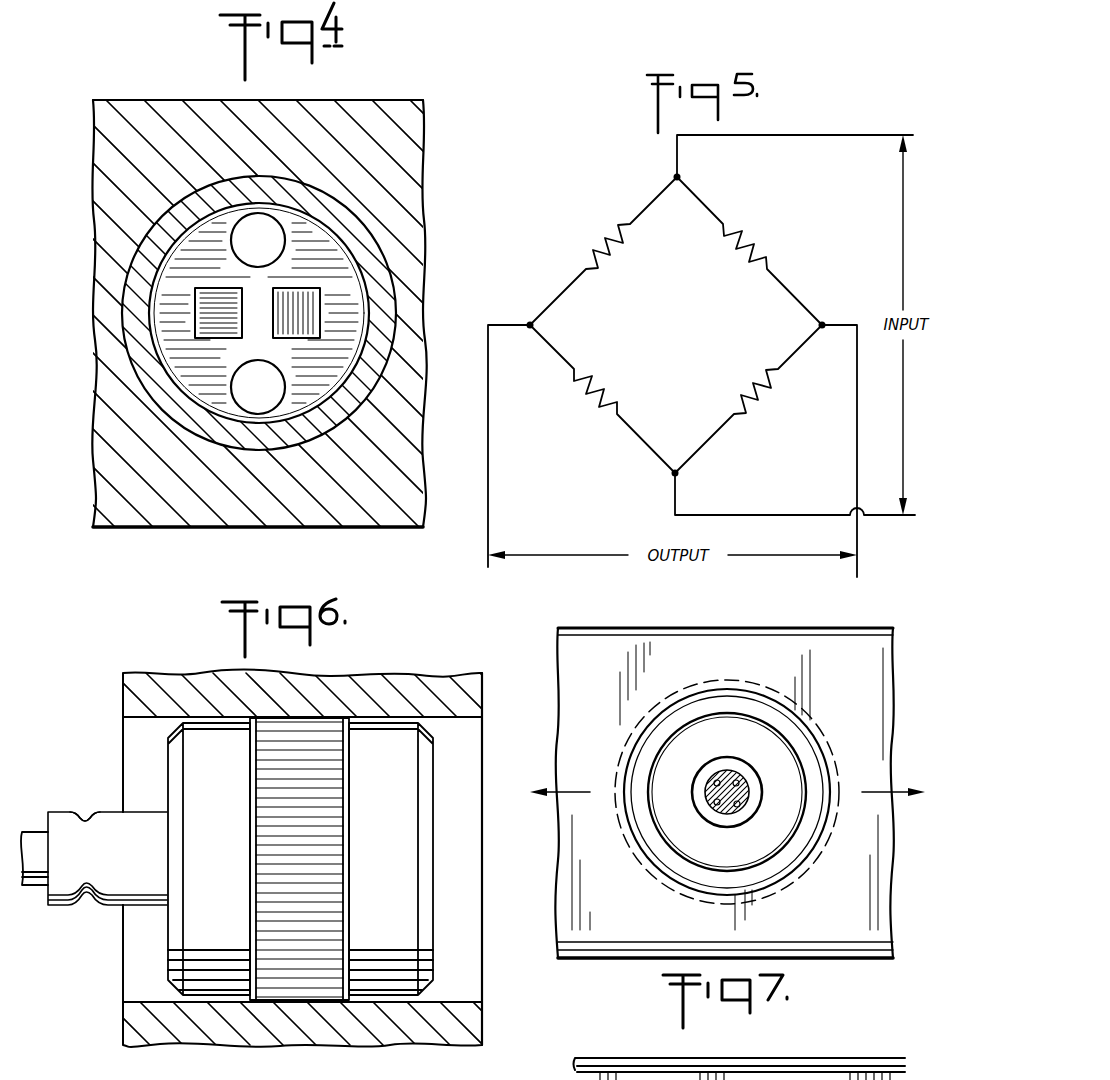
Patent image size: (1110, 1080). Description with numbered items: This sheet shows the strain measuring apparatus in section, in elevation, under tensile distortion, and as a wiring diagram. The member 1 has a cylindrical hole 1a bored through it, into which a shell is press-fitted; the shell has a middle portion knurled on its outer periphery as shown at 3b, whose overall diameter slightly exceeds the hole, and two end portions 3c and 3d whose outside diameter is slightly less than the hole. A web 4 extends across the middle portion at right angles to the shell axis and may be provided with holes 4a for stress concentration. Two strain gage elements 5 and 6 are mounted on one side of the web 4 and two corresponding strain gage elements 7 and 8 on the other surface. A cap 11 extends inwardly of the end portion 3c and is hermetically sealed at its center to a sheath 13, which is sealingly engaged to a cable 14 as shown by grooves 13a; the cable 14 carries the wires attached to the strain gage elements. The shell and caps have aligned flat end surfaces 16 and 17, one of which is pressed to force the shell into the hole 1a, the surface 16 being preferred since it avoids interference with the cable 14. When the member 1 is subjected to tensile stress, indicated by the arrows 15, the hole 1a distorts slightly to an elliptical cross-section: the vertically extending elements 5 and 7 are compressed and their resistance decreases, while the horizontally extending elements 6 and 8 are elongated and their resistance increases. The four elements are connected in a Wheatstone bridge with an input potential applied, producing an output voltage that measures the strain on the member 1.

In FIG. 4, the member 1 is at (403, 178).
In FIG. 6, the member 1 is at (393, 690).
In FIG. 7, the member 1 is at (840, 688).
In FIG. 6, the cylindrical hole 1a is at (138, 1000).
In FIG. 7, the cylindrical hole 1a is at (838, 768).
In FIG. 6, the knurled surface 3b is at (310, 813).
In FIG. 6, the end portion of shell 3c is at (220, 813).
In FIG. 7, the end portion of shell 3c is at (775, 880).
In FIG. 6, the end portion of shell 3d is at (396, 813).
In FIG. 4, the web 4 is at (345, 272).
In FIG. 4, the holes in web 4a is at (266, 402).
In FIG. 5, the strain gage element 5 is at (612, 238).
In FIG. 5, the strain gage element 6 is at (748, 238).
In FIG. 4, the strain gage element 7 is at (298, 290).
In FIG. 5, the strain gage element 7 is at (752, 404).
In FIG. 4, the strain gage element 8 is at (215, 290).
In FIG. 5, the strain gage element 8 is at (590, 406).
In FIG. 7, the cap 11 is at (736, 863).
In FIG. 6, the sheath 13 is at (133, 866).
In FIG. 7, the sheath 13 is at (703, 810).
In FIG. 6, the grooves 13a is at (89, 812).
In FIG. 6, the cable 14 is at (30, 832).
In FIG. 7, the cable 14 is at (727, 771).
In FIG. 7, the arrows 15 is at (571, 790).
In FIG. 6, the flat end surface 16 is at (428, 946).
In FIG. 6, the flat end surface 17 is at (168, 944).